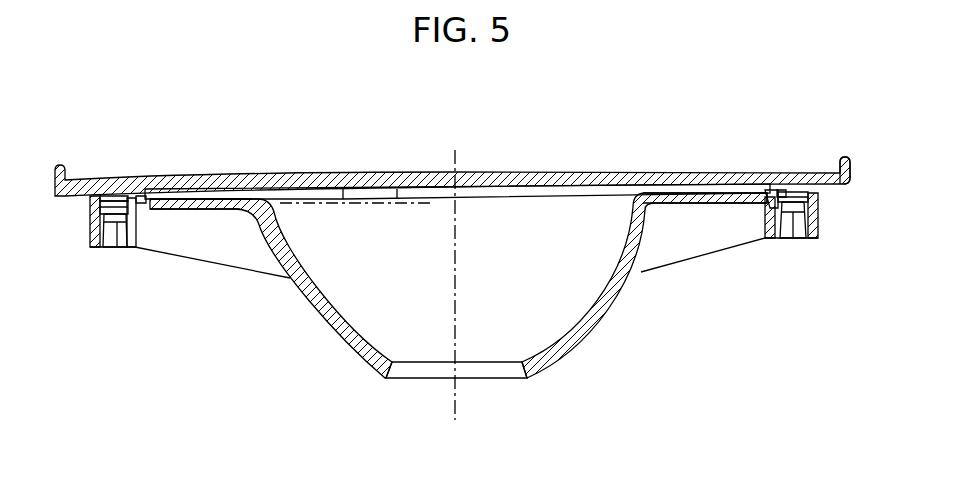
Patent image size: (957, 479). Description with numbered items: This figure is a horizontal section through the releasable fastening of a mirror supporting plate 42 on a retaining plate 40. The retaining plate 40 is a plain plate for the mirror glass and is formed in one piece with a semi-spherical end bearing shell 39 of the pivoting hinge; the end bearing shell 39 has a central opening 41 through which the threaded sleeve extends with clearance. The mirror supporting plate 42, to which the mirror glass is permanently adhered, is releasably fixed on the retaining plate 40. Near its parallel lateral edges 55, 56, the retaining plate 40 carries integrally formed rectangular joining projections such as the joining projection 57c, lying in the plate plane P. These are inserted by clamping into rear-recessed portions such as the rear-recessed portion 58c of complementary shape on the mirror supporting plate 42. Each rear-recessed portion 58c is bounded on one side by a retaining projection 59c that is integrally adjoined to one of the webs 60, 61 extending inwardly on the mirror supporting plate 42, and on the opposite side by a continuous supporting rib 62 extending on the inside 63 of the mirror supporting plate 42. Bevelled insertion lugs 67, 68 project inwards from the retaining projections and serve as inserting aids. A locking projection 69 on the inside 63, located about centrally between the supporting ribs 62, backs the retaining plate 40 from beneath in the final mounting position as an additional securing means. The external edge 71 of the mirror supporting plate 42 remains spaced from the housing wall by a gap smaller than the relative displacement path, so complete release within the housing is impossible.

The end bearing shell 39 is at (585, 330).
The retaining plate 40 is at (697, 206).
The central opening 41 is at (420, 368).
The mirror supporting plate 42 is at (362, 174).
The lateral edge 55 is at (770, 197).
The lateral edge 56 is at (130, 197).
The joining projection 57c is at (100, 208).
The rear-recessed portion 58c is at (110, 196).
The retaining projection 59c is at (106, 218).
The web 60 is at (92, 236).
The web 61 is at (815, 228).
The supporting rib 62 is at (139, 197).
The inside 63 is at (505, 191).
The insertion lug 67 is at (117, 236).
The insertion lug 68 is at (793, 222).
The locking projection 69 is at (372, 197).
The external edge 71 is at (845, 158).
The plate plane P is at (407, 204).